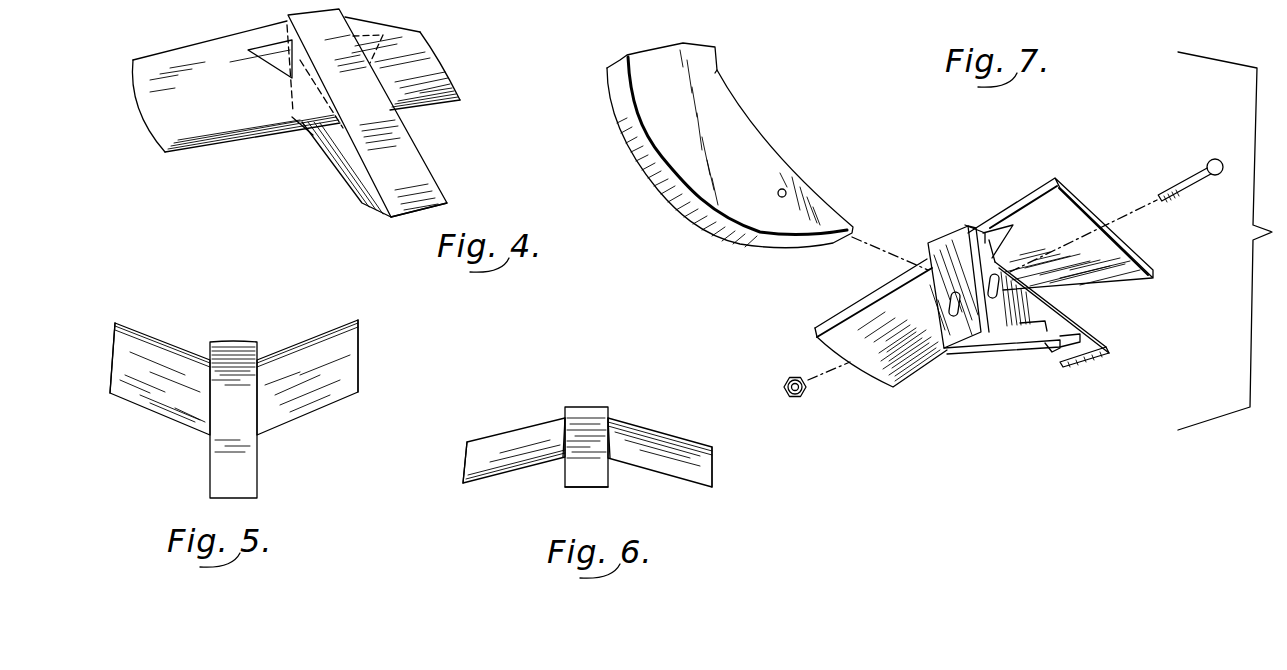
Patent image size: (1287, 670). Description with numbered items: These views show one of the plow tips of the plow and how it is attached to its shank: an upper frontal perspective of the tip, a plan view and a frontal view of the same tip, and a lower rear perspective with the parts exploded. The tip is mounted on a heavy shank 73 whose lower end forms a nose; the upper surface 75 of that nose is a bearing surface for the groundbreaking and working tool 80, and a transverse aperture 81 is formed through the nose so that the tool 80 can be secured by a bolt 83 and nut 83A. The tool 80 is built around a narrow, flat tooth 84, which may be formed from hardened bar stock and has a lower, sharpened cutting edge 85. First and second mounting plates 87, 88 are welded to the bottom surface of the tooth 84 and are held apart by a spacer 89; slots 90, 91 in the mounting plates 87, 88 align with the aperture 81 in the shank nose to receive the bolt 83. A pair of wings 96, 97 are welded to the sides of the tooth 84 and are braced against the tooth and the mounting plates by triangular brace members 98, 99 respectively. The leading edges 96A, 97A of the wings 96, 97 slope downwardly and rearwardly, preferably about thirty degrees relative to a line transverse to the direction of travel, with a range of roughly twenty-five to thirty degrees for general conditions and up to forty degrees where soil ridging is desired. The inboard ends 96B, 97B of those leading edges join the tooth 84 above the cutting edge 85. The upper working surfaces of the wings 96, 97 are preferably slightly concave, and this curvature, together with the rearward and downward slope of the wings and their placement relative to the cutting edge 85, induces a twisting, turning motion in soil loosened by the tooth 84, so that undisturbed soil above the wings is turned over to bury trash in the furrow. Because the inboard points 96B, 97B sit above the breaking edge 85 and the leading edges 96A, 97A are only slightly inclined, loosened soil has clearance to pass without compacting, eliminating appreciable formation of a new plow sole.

In FIG. 7, the shank 73 is at (710, 73).
In FIG. 7, the upper surface of the nose 75 is at (822, 195).
In FIG. 7, the groundbreaking and working tool 80 is at (975, 273).
In FIG. 7, the transverse aperture 81 is at (784, 189).
In FIG. 7, the bolt 83 is at (1182, 177).
In FIG. 7, the nut 83A is at (800, 400).
In FIG. 4, the tooth 84 is at (417, 162).
In FIG. 5, the tooth 84 is at (247, 480).
In FIG. 6, the tooth 84 is at (600, 418).
In FIG. 7, the tooth 84 is at (1096, 336).
In FIG. 4, the cutting edge 85 is at (433, 207).
In FIG. 6, the cutting edge 85 is at (597, 490).
In FIG. 7, the cutting edge 85 is at (1100, 357).
In FIG. 7, the first mounting plate 87 is at (977, 357).
In FIG. 7, the second mounting plate 88 is at (1030, 324).
In FIG. 7, the spacer 89 is at (1048, 350).
In FIG. 7, the slot 90 is at (951, 303).
In FIG. 7, the slot 91 is at (999, 292).
In FIG. 4, the wing 96 is at (163, 60).
In FIG. 5, the wing 96 is at (153, 340).
In FIG. 6, the wing 96 is at (498, 440).
In FIG. 7, the wing 96 is at (895, 380).
In FIG. 5, the leading edge of wing 96A is at (147, 408).
In FIG. 6, the leading edge of wing 96A is at (520, 470).
In FIG. 6, the inboard end of leading edge 96B is at (562, 460).
In FIG. 4, the wing 97 is at (410, 33).
In FIG. 5, the wing 97 is at (348, 335).
In FIG. 6, the wing 97 is at (682, 442).
In FIG. 7, the wing 97 is at (1143, 277).
In FIG. 5, the leading edge of wing 97A is at (340, 402).
In FIG. 6, the leading edge of wing 97A is at (687, 483).
In FIG. 6, the inboard end of leading edge 97B is at (613, 460).
In FIG. 7, the triangular brace member 98 is at (916, 275).
In FIG. 7, the triangular brace member 99 is at (987, 248).